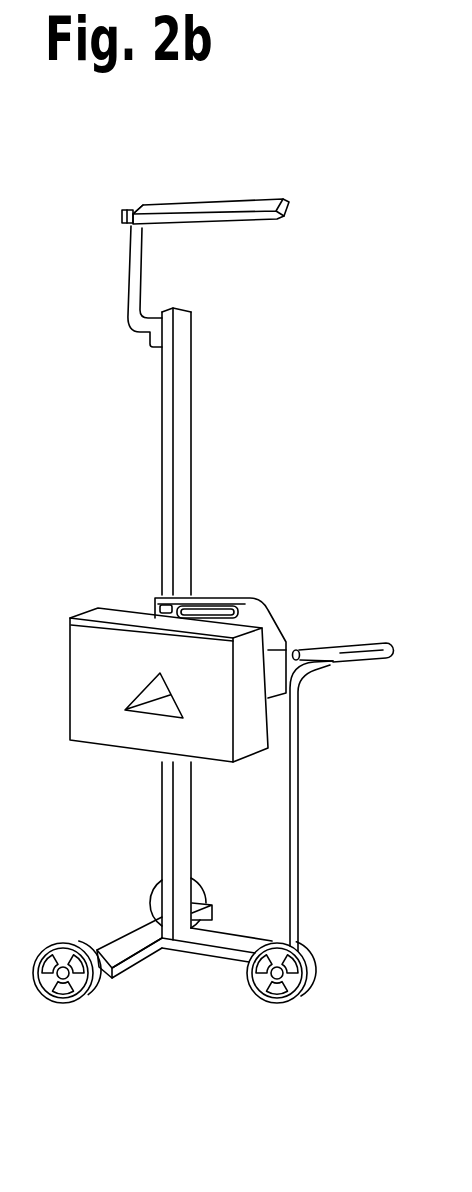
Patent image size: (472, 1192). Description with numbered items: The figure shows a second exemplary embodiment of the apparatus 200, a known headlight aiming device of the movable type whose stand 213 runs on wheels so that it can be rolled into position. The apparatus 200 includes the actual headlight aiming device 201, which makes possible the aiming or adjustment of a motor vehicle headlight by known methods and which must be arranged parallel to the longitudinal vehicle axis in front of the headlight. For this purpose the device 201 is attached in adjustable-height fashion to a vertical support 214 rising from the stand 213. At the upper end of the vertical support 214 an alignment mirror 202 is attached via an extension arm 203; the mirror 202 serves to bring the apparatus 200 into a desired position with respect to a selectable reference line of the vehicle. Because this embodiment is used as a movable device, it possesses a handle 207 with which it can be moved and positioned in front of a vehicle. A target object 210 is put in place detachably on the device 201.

The apparatus 200 is at (98, 189).
The headlight aiming device 201 is at (230, 602).
The alignment mirror 202 is at (225, 208).
The extension arm 203 is at (135, 272).
The handle 207 is at (342, 662).
The target object 210 is at (117, 733).
The stand 213 is at (202, 950).
The vertical support 214 is at (180, 457).